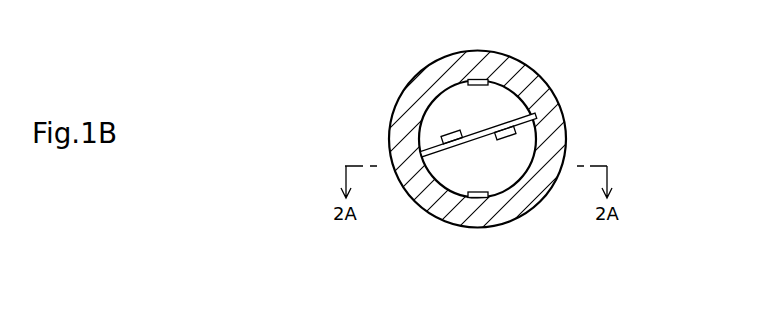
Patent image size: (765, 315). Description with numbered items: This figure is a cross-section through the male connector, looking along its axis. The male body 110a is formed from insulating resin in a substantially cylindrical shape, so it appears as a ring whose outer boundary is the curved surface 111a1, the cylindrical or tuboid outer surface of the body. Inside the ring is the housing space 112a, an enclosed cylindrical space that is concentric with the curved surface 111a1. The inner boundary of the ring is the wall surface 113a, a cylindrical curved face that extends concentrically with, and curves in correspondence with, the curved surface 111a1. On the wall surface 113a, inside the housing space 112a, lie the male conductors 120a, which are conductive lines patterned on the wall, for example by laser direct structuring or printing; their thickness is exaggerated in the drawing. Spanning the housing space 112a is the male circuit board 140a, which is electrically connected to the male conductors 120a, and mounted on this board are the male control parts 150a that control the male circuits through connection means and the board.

The male body 110a is at (415, 105).
The curved surface 111a1 is at (530, 65).
The housing space 112a is at (455, 108).
The wall surface 113a is at (523, 95).
The male conductors 120a is at (478, 79).
The male circuit board 140a is at (537, 118).
The male control parts 150a is at (445, 134).